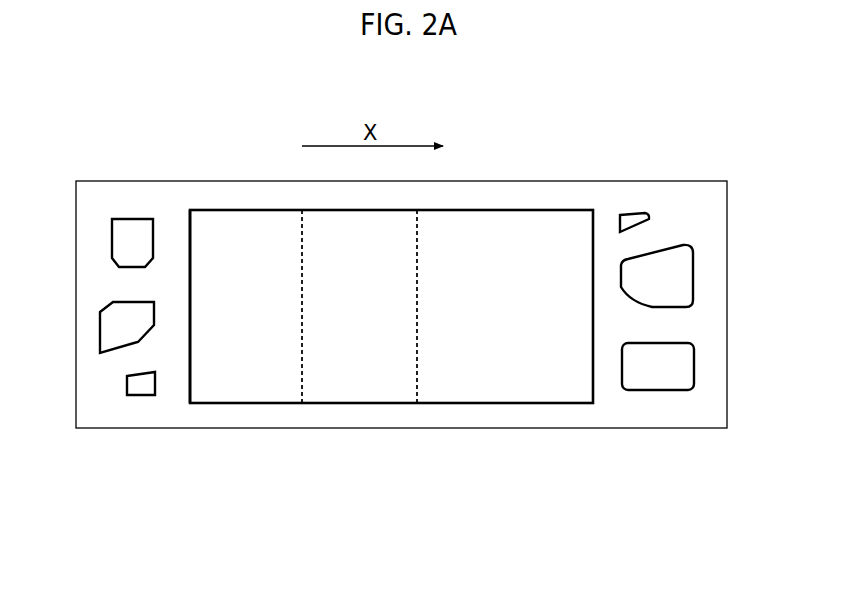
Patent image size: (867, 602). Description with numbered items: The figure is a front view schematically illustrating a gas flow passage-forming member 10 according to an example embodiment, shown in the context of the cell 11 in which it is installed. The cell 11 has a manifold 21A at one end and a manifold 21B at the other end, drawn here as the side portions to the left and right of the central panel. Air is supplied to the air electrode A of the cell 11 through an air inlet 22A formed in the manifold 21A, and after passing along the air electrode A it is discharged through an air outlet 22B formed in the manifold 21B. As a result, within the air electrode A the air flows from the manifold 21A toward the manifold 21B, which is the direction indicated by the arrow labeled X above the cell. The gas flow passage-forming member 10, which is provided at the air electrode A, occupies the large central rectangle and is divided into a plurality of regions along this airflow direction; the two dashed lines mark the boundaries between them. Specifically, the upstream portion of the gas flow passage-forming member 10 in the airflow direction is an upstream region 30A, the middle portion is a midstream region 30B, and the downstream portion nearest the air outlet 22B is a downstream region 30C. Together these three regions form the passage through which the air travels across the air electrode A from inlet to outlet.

The gas flow passage-forming member 10 is at (515, 253).
The cell 11 is at (473, 172).
The manifold 21A is at (91, 253).
The manifold 21B is at (699, 252).
The air inlet 22A is at (118, 323).
The air outlet 22B is at (677, 278).
The upstream region 30A is at (230, 232).
The midstream region 30B is at (359, 382).
The downstream region 30C is at (515, 382).
The air electrode A is at (246, 383).